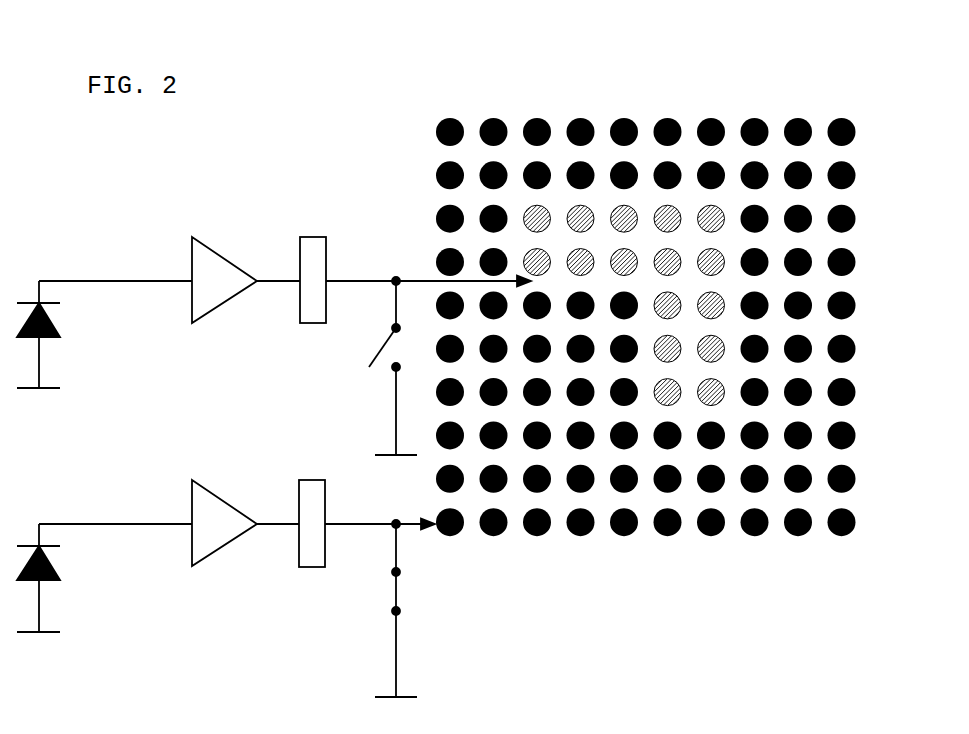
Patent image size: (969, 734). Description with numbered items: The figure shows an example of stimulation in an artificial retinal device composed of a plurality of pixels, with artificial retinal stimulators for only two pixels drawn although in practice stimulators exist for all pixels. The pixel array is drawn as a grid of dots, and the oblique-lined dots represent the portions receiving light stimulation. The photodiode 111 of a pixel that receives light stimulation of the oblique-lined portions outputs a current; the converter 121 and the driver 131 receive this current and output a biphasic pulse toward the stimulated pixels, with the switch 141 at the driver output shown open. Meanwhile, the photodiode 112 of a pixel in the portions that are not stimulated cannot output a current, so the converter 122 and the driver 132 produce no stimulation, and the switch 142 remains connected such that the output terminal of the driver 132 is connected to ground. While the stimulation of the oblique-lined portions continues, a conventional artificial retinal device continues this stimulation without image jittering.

The photodiode 111 is at (60, 332).
The photodiode 112 is at (60, 575).
The converter 121 is at (208, 244).
The converter 122 is at (207, 488).
The driver 131 is at (319, 237).
The driver 132 is at (318, 480).
The switch 141 is at (382, 350).
The switch 142 is at (390, 593).